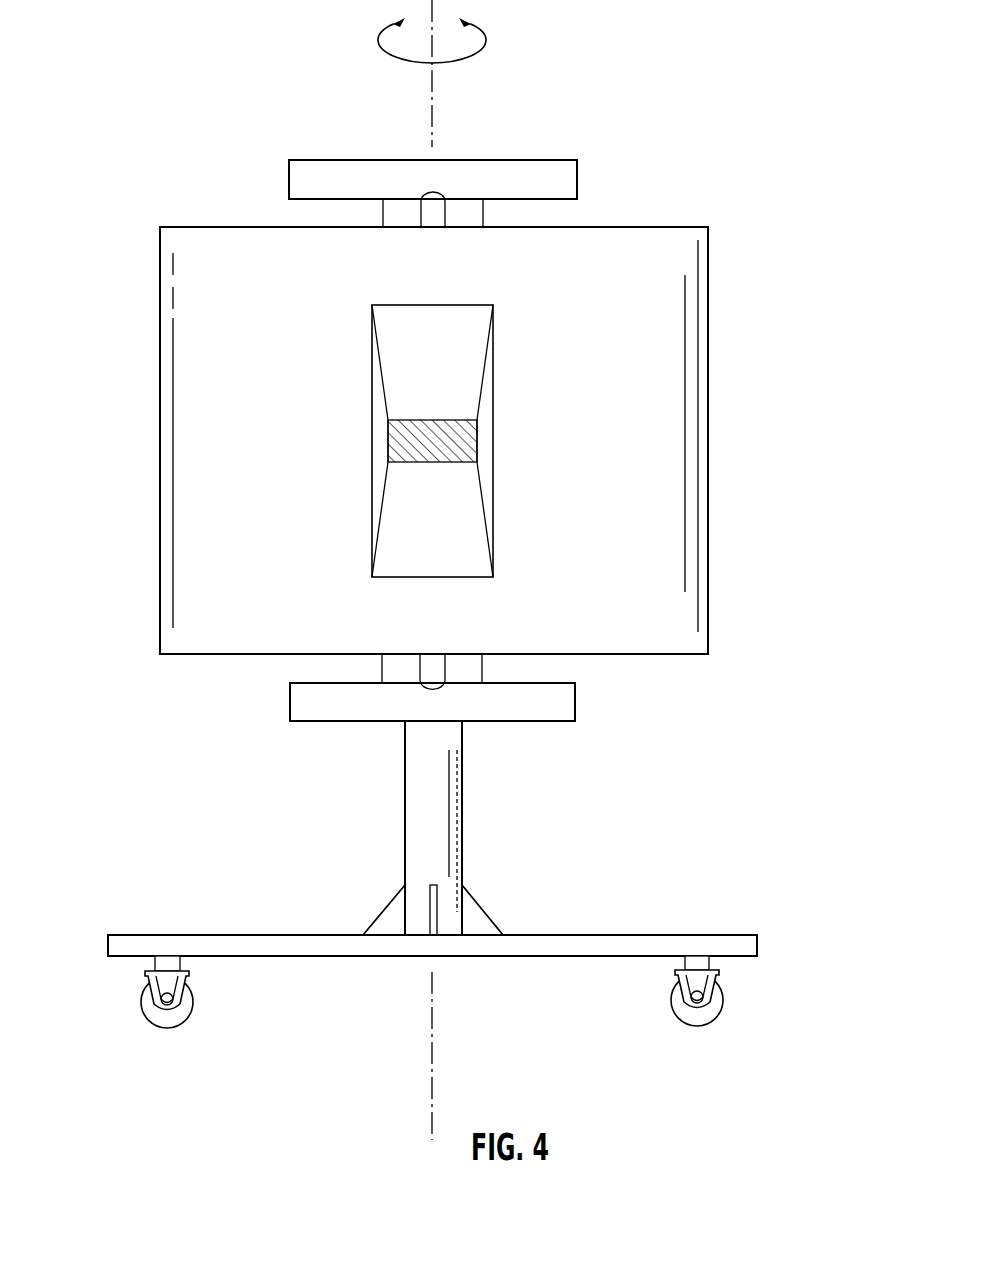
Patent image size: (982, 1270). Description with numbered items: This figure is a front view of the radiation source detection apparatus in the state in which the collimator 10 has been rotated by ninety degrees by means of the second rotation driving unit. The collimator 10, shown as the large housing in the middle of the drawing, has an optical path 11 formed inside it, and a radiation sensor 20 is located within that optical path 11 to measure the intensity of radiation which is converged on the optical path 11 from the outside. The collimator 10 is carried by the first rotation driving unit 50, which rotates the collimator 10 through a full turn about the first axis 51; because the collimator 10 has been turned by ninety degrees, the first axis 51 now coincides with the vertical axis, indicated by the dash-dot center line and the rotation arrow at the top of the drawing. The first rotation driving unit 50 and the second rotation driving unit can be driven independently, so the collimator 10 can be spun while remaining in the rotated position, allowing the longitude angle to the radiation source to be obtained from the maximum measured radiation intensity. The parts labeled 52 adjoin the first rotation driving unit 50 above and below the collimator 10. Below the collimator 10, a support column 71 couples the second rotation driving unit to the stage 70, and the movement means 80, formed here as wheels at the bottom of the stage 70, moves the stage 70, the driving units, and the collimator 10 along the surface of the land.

The collimator 10 is at (690, 264).
The optical path 11 is at (466, 363).
The radiation sensor 20 is at (472, 440).
The first rotation driving unit 50 is at (440, 210).
The first axis 51 is at (430, 108).
The bearing support 52 is at (483, 213).
The stage 70 is at (700, 935).
The support column 71 is at (410, 806).
The movement means 80 is at (173, 1018).